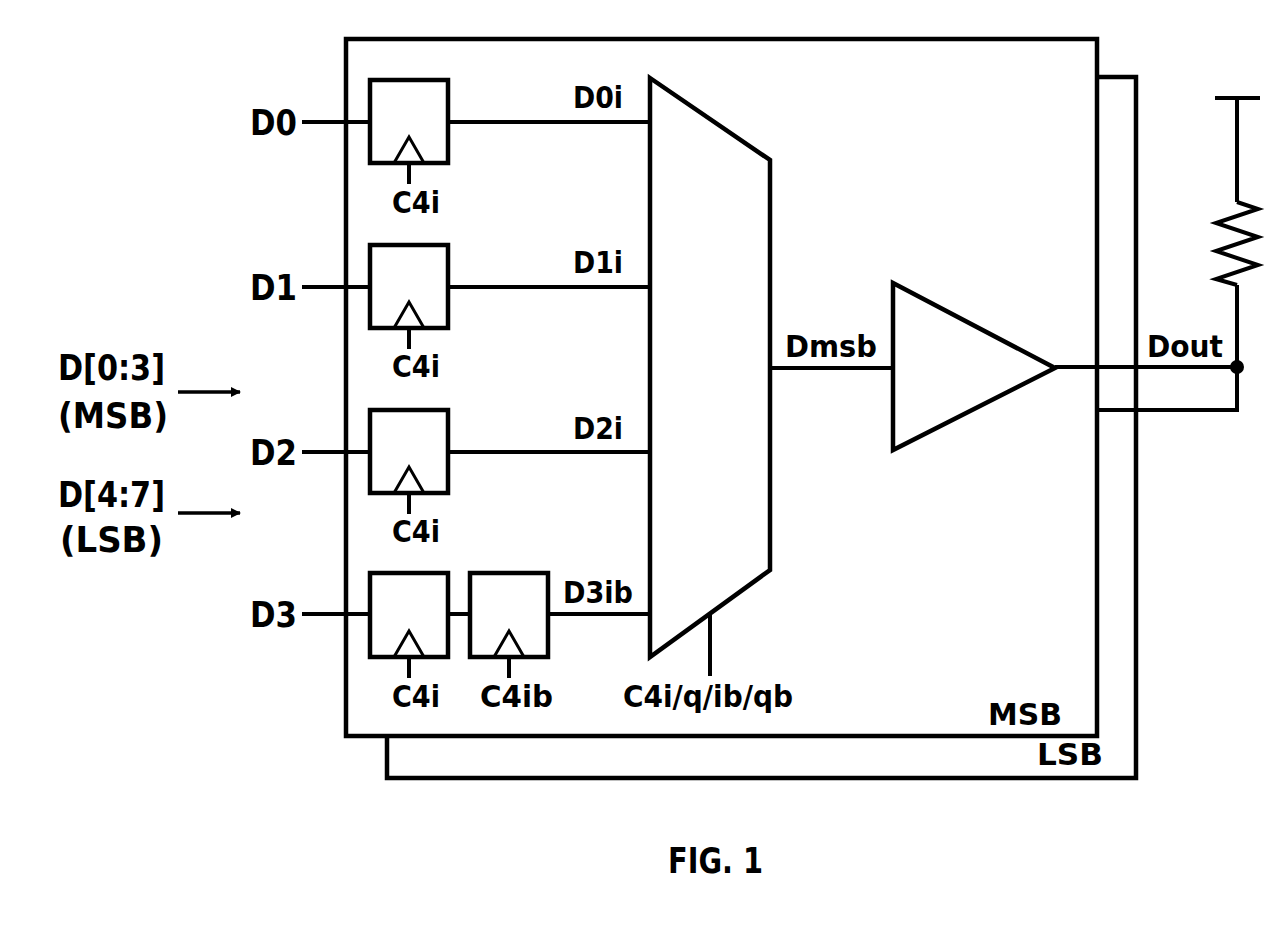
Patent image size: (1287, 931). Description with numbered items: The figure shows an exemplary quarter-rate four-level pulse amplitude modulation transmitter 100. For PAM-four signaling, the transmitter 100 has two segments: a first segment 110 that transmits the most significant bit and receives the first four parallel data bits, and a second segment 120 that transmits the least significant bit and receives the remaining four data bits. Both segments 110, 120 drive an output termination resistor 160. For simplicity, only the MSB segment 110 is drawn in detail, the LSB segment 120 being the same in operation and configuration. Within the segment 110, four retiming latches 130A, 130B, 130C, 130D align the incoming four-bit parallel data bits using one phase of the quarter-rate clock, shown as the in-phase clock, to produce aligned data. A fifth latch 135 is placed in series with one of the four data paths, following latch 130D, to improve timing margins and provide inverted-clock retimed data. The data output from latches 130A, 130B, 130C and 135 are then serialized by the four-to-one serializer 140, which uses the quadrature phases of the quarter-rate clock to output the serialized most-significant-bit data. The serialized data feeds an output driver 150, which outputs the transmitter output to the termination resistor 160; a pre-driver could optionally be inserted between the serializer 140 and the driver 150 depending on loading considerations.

The PAM-4 transmitter 100 is at (698, 380).
The first segment 110 is at (1102, 64).
The second segment 120 is at (1138, 680).
The retiming latch 130A is at (437, 127).
The retiming latch 130B is at (437, 292).
The retiming latch 130C is at (437, 457).
The retiming latch 130D is at (437, 619).
The fifth latch 135 is at (530, 619).
The 4:1 serializer 140 is at (728, 131).
The output driver 150 is at (917, 298).
The output termination resistor 160 is at (1210, 194).